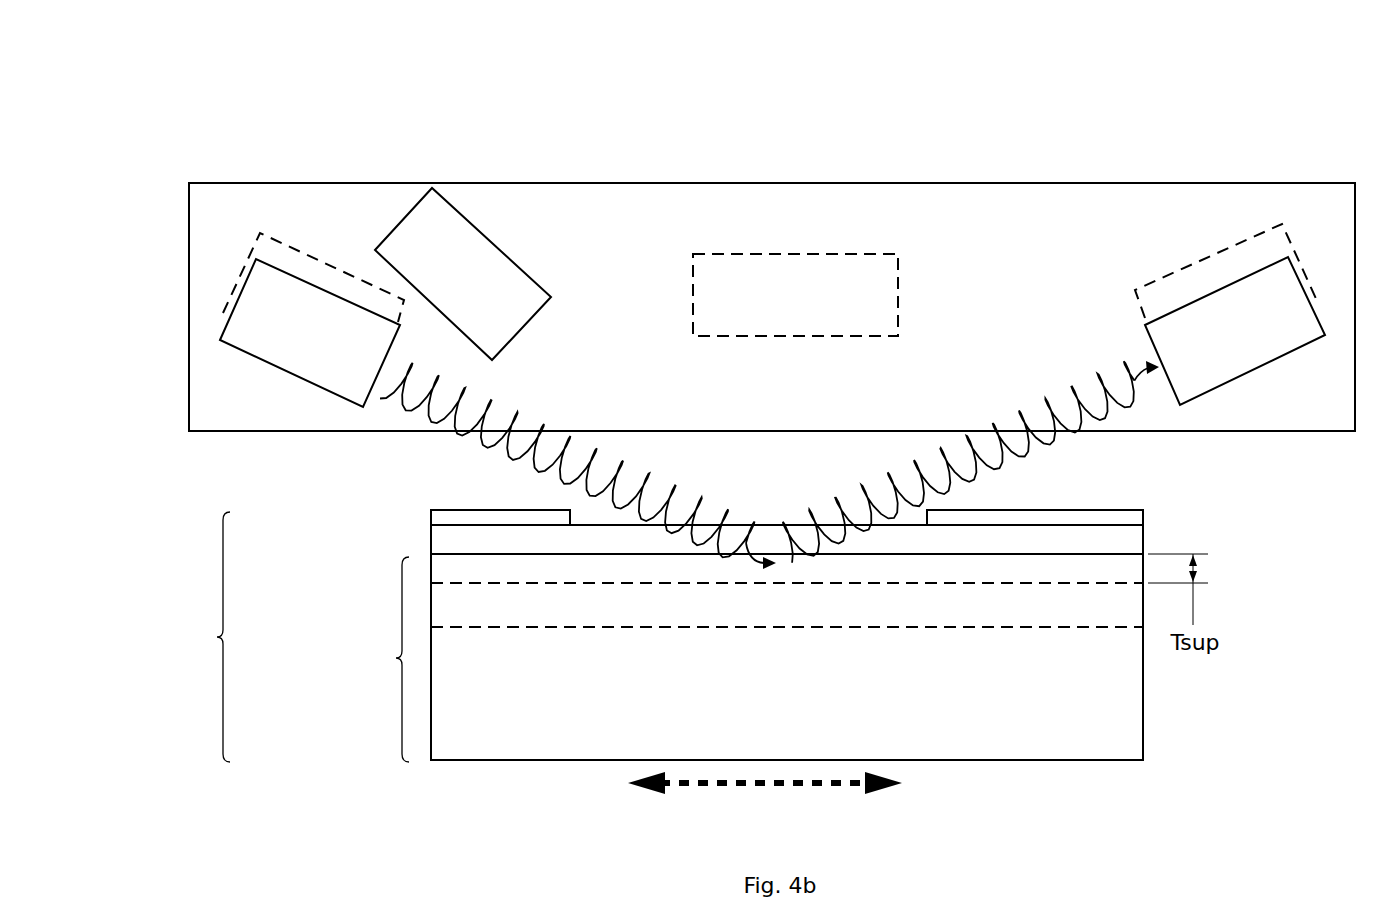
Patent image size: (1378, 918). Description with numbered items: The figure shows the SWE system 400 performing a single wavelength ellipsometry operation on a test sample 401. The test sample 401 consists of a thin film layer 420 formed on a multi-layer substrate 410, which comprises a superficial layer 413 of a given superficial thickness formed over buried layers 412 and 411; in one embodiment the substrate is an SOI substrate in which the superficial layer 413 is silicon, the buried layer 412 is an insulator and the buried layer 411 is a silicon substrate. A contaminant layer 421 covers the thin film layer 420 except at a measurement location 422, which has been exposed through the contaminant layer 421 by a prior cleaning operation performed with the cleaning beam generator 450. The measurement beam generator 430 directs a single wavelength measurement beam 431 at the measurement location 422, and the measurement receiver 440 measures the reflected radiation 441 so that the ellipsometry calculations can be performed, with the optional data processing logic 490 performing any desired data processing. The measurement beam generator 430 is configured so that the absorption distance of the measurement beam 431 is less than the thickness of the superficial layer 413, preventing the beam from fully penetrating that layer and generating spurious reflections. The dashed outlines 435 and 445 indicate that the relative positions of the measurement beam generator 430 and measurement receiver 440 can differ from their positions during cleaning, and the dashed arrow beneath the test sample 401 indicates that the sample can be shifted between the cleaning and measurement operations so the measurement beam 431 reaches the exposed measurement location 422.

The SWE system 400 is at (196, 88).
The test sample 401 is at (198, 637).
The multi-layer substrate 410 is at (743, 643).
The buried layer 411 is at (439, 742).
The buried layer 412 is at (439, 617).
The superficial layer 413 is at (439, 580).
The thin film layer 420 is at (1145, 533).
The contaminant layer 421 is at (1145, 518).
The measurement location 422 is at (772, 522).
The measurement beam generator 430 is at (286, 340).
The measurement beam 431 is at (480, 455).
The left actuator displaced position 435 is at (302, 253).
The measurement receiver 440 is at (1224, 338).
The right spring 441 is at (1040, 448).
The right actuator displaced position 445 is at (1173, 277).
The cleaning beam generator 450 is at (437, 280).
The data processing logic 490 is at (774, 303).